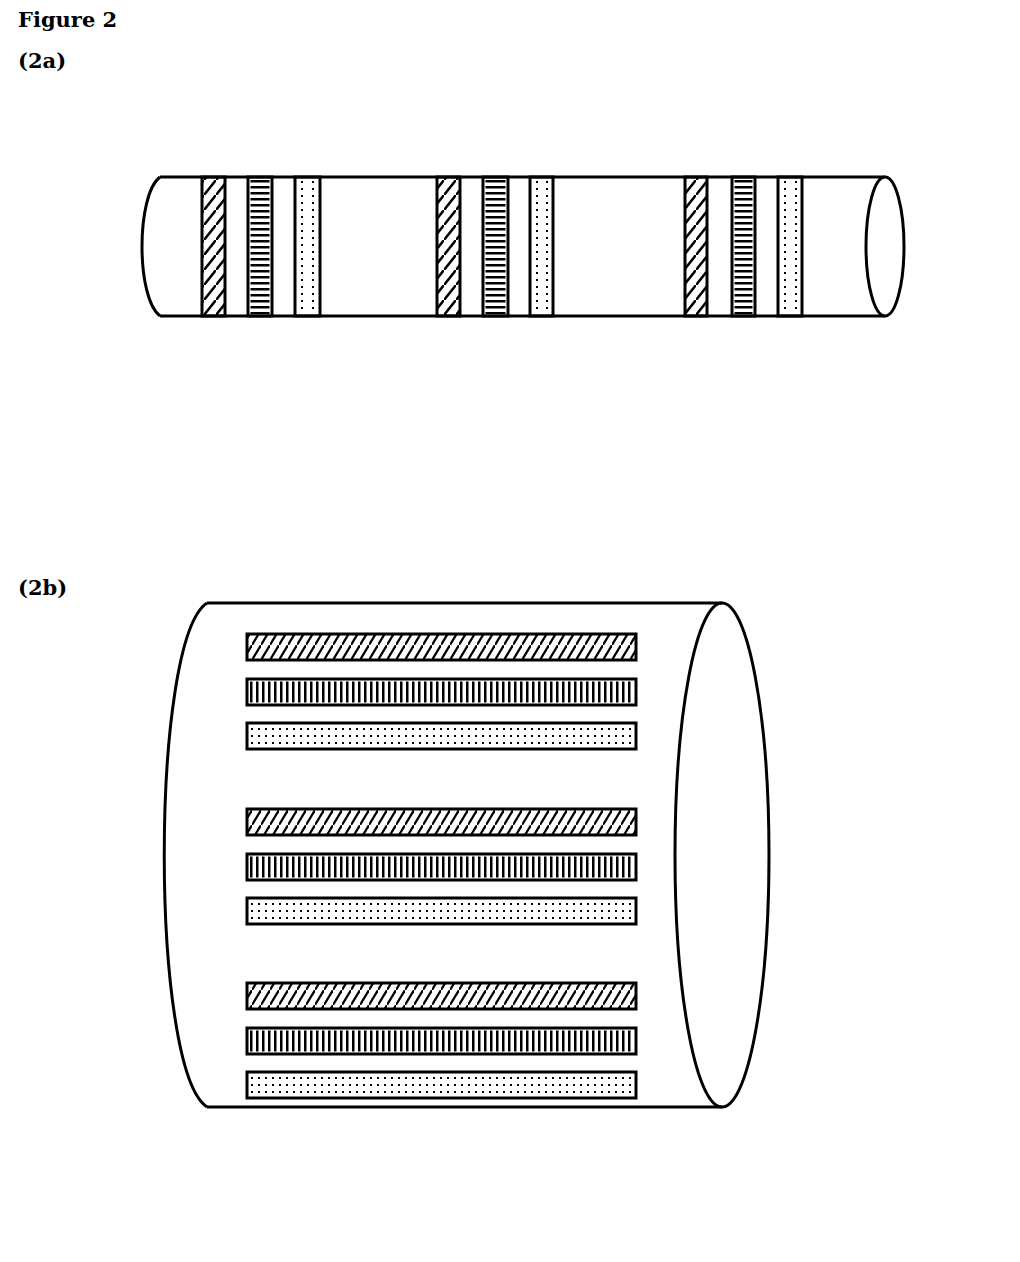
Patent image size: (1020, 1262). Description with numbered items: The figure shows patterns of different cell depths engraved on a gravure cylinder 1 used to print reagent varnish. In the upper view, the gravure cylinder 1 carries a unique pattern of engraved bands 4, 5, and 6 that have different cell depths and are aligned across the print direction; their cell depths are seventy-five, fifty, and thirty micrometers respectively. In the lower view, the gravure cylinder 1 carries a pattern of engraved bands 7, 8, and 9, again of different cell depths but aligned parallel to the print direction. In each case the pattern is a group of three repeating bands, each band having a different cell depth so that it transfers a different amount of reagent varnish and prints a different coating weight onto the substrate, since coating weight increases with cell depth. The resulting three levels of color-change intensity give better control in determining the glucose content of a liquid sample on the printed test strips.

The gravure cylinder 1 is at (143, 295).
The engraved band 4 is at (447, 170).
The engraved band 5 is at (495, 172).
The engraved band 6 is at (543, 170).
The engraved band 7 is at (245, 826).
The engraved band 8 is at (245, 868).
The engraved band 9 is at (245, 910).